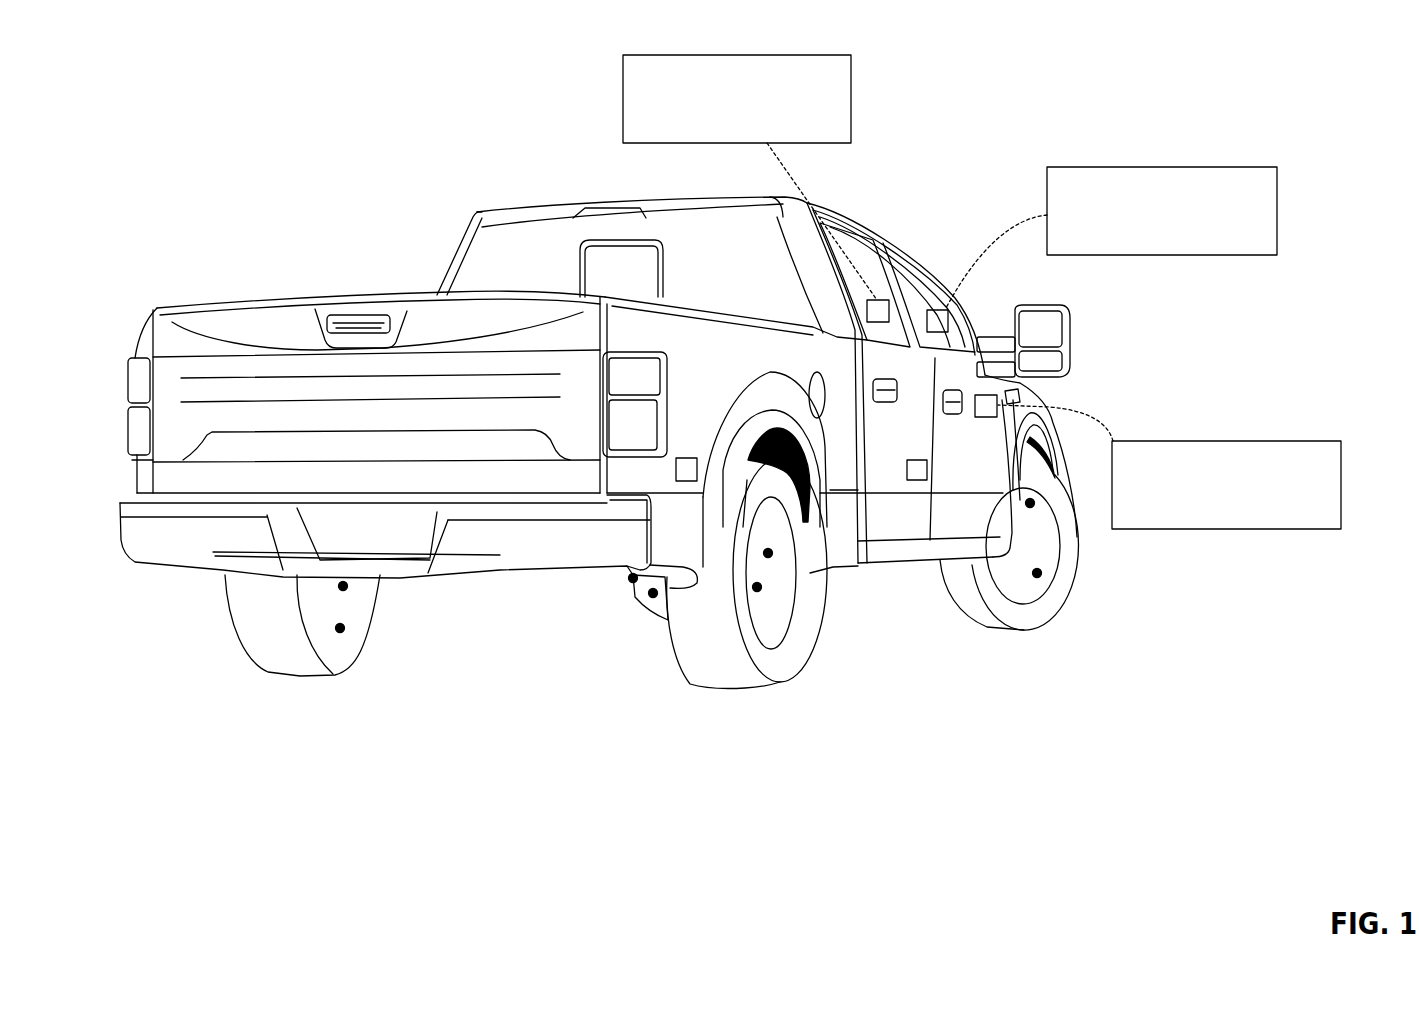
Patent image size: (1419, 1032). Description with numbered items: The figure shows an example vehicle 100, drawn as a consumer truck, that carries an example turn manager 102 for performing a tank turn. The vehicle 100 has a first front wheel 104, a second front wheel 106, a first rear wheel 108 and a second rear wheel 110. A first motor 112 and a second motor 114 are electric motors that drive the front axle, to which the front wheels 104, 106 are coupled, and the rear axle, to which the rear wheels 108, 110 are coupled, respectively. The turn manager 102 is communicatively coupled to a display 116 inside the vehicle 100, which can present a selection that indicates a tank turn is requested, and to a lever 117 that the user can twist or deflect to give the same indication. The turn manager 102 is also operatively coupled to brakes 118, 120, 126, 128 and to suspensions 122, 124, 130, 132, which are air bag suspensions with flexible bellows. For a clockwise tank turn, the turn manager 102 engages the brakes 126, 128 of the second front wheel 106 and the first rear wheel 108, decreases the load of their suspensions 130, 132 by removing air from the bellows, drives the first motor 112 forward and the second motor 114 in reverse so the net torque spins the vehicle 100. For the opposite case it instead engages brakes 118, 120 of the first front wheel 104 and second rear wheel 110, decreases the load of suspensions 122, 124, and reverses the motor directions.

The vehicle 100 is at (1062, 117).
The turn manager 102 is at (1280, 440).
The first front wheel 104 is at (635, 593).
The second front wheel 106 is at (953, 593).
The first rear wheel 108 is at (242, 647).
The second rear wheel 110 is at (697, 677).
The first motor 112 is at (907, 459).
The second motor 114 is at (690, 457).
The display 116 is at (1213, 167).
The lever 117 is at (790, 55).
The brake 118 is at (653, 595).
The brake 120 is at (757, 587).
The suspension 122 is at (630, 580).
The suspension 124 is at (768, 553).
The brake 126 is at (1037, 573).
The brake 128 is at (340, 628).
The suspension 130 is at (1030, 503).
The suspension 132 is at (343, 587).